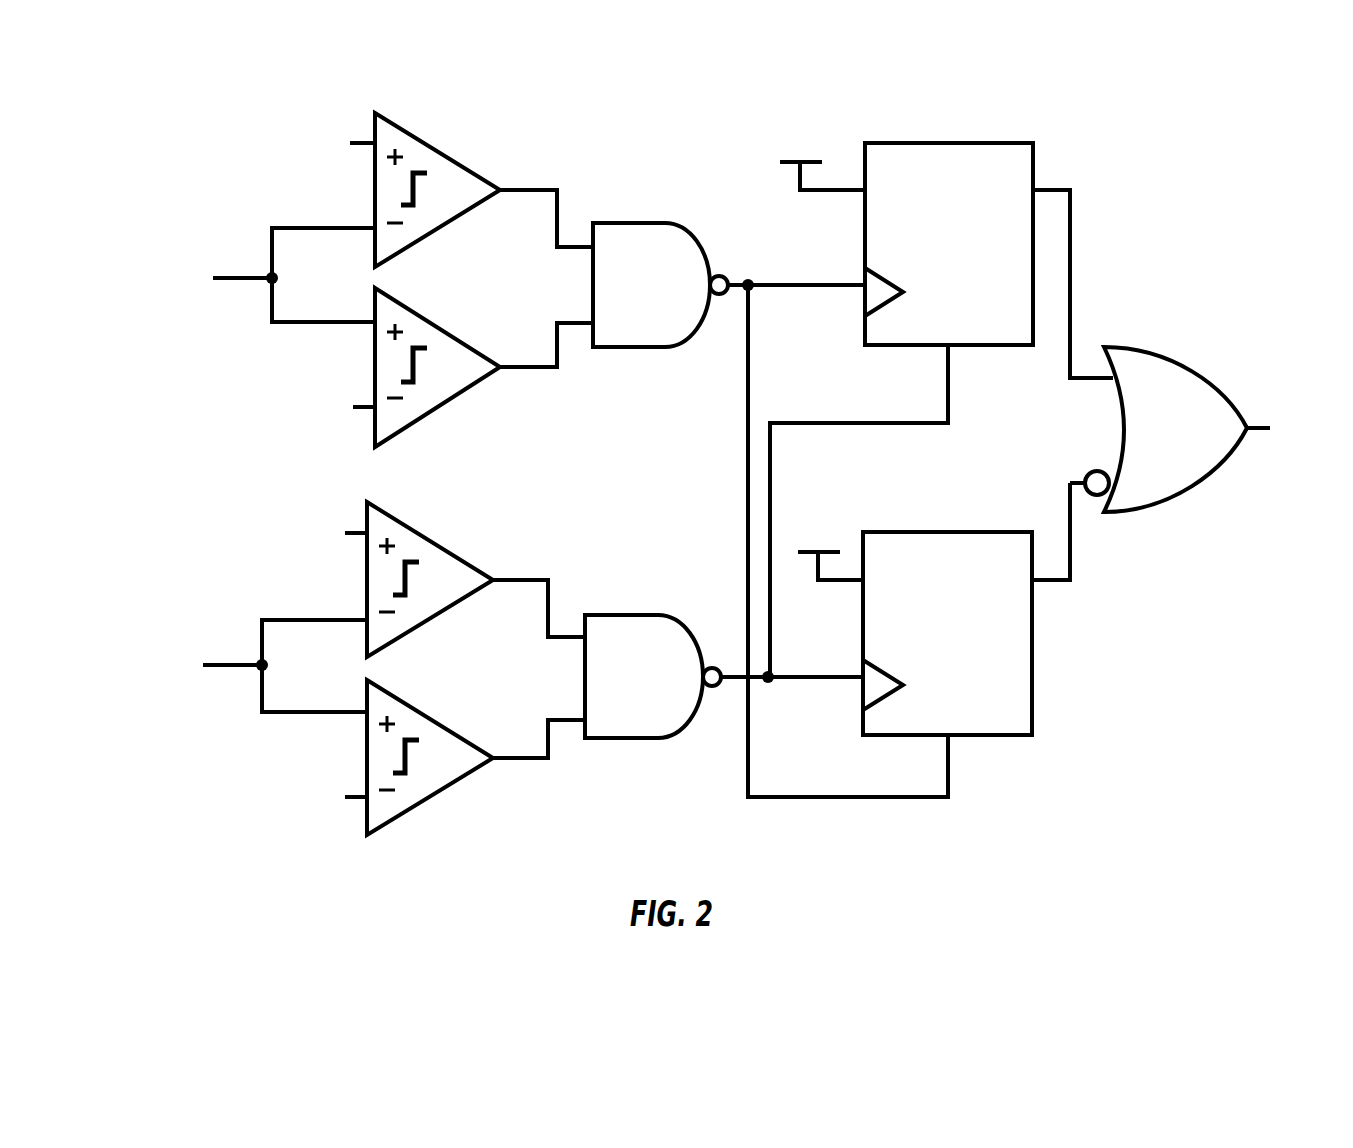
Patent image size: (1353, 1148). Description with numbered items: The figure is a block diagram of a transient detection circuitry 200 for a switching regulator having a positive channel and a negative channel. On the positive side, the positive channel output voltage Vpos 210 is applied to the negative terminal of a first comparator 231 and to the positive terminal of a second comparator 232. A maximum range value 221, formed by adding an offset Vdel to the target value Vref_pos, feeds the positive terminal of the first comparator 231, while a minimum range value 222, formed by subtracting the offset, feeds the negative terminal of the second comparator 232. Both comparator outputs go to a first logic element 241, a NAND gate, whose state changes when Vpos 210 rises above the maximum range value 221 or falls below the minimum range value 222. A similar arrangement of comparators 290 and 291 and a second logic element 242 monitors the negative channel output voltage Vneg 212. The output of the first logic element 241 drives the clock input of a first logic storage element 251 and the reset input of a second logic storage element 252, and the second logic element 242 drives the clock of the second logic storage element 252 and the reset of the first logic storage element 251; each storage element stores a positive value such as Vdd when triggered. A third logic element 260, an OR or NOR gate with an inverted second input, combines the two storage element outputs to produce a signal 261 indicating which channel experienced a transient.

The transient detection circuitry 200 is at (1199, 91).
The positive channel output voltage Vpos 210 is at (155, 244).
The negative channel output voltage Vneg 212 is at (146, 640).
The maximum range value 221 is at (208, 112).
The minimum range value 222 is at (217, 385).
The first comparator 231 is at (450, 145).
The second comparator 232 is at (436, 316).
The first logic element 241 is at (626, 211).
The second logic element 242 is at (640, 599).
The first logic storage element 251 is at (963, 132).
The second logic storage element 252 is at (923, 520).
The third logic element 260 is at (1153, 345).
The signal 261 is at (1258, 417).
The comparator 290 is at (440, 537).
The comparator 291 is at (431, 707).